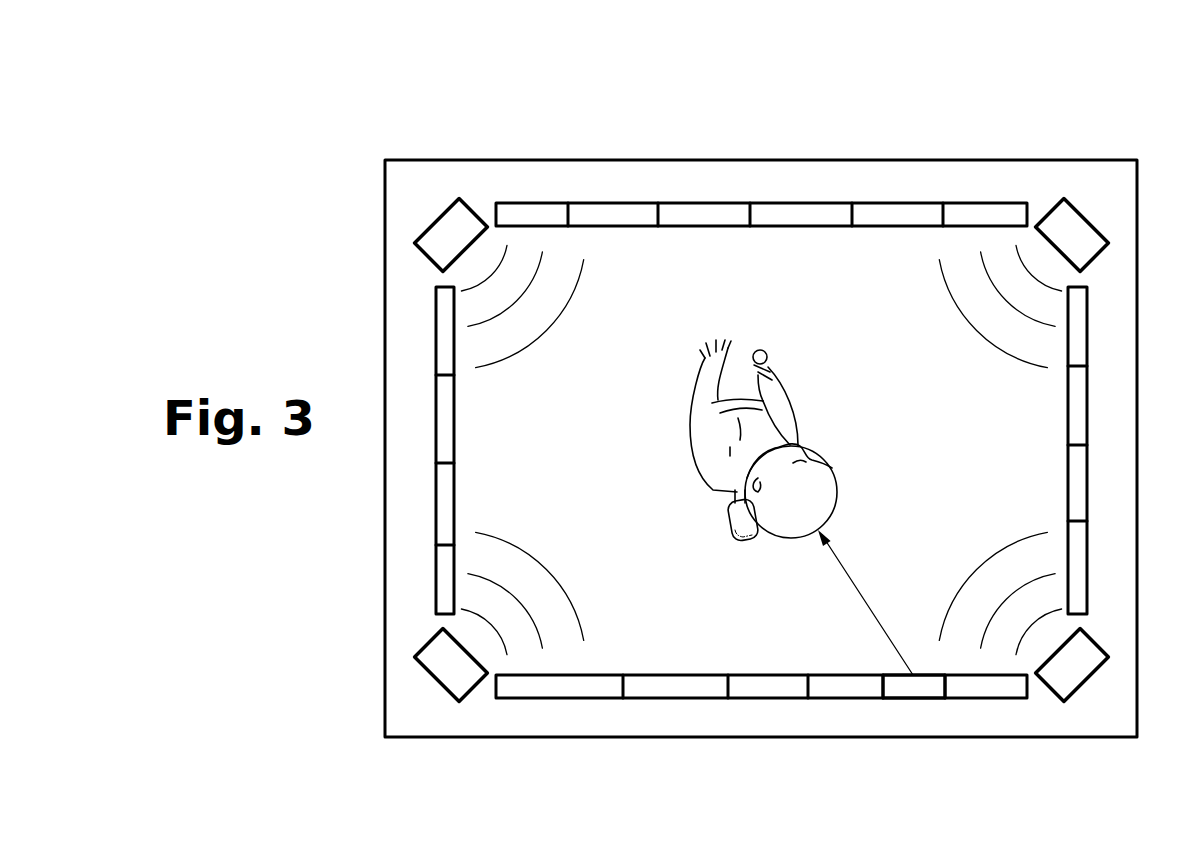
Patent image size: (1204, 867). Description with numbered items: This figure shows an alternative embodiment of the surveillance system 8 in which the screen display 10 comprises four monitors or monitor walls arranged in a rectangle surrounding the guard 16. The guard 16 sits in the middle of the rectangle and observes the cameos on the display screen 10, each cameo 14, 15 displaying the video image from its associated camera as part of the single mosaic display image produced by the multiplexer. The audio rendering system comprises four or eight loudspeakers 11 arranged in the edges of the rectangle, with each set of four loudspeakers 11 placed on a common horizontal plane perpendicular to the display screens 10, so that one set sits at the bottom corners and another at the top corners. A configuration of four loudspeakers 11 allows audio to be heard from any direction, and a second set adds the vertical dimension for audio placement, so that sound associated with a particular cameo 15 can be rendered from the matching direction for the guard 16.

The surveillance system 8 is at (1002, 101).
The screen display 10 is at (820, 203).
The loudspeaker 11 is at (459, 220).
The cameo 14 is at (445, 323).
The cameo 15 is at (912, 686).
The guard 16 is at (808, 502).